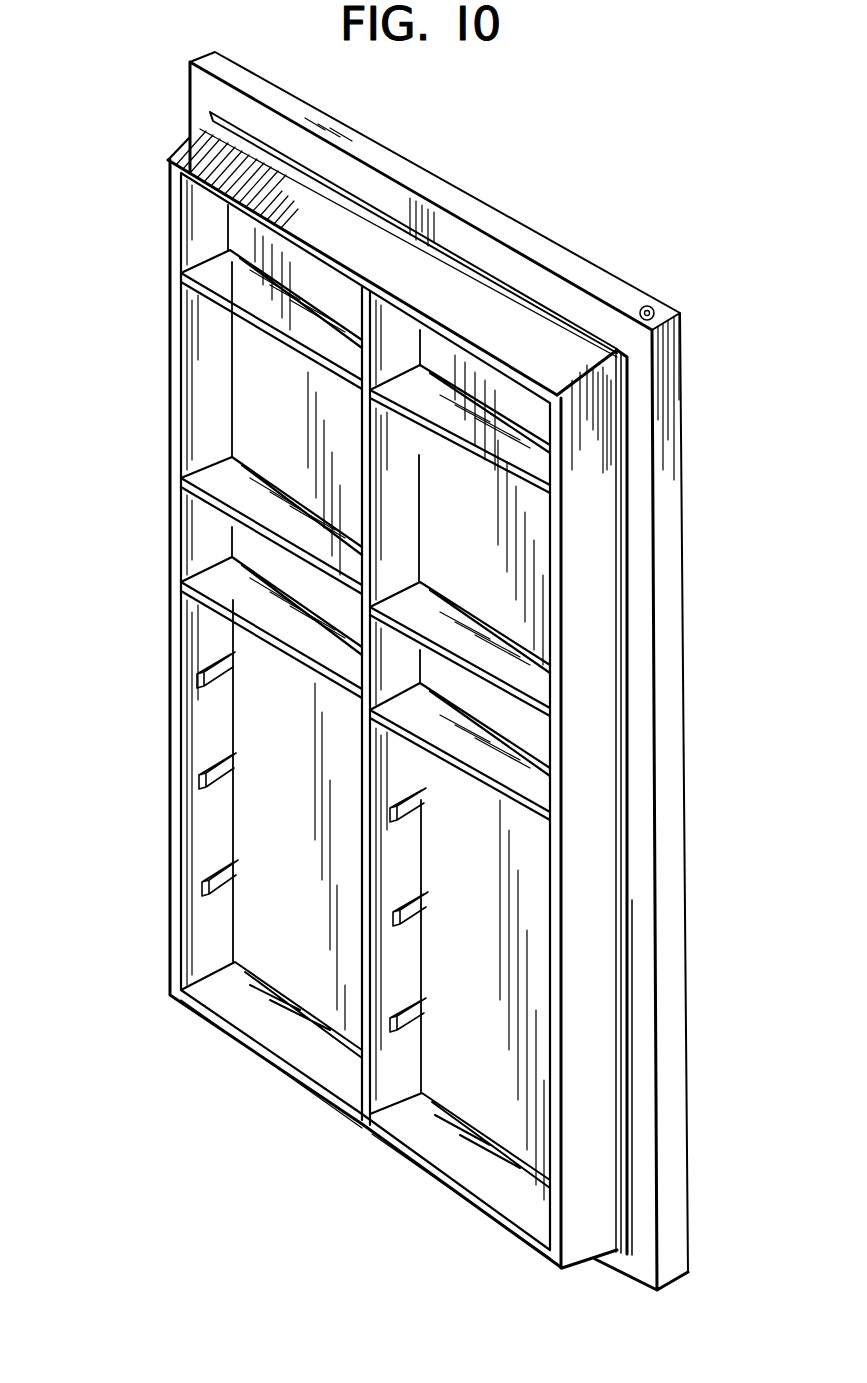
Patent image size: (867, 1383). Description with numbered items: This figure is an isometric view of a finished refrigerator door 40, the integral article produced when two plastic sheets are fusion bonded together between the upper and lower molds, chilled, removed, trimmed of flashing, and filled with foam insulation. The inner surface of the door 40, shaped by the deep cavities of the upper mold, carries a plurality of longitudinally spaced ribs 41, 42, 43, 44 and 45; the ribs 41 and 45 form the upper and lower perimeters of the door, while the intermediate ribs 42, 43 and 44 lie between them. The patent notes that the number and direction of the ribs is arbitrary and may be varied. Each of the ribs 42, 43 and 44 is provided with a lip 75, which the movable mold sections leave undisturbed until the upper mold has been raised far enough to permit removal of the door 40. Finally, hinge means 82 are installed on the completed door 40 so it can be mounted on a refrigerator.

The refrigerator door 40 is at (520, 234).
The rib 41 is at (342, 252).
The rib 42 is at (525, 462).
The rib 43 is at (525, 672).
The rib 44 is at (530, 776).
The rib 45 is at (488, 1183).
The lip 75 is at (222, 287).
The hinge means 82 is at (655, 307).